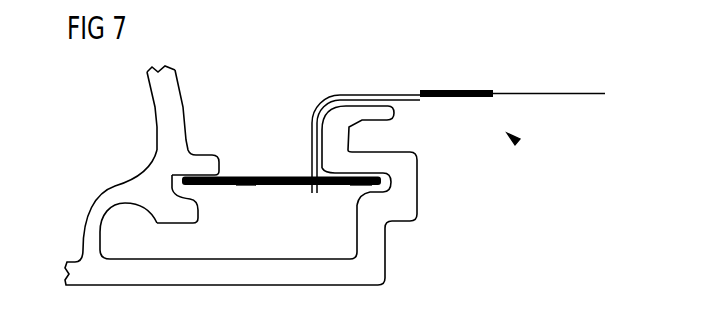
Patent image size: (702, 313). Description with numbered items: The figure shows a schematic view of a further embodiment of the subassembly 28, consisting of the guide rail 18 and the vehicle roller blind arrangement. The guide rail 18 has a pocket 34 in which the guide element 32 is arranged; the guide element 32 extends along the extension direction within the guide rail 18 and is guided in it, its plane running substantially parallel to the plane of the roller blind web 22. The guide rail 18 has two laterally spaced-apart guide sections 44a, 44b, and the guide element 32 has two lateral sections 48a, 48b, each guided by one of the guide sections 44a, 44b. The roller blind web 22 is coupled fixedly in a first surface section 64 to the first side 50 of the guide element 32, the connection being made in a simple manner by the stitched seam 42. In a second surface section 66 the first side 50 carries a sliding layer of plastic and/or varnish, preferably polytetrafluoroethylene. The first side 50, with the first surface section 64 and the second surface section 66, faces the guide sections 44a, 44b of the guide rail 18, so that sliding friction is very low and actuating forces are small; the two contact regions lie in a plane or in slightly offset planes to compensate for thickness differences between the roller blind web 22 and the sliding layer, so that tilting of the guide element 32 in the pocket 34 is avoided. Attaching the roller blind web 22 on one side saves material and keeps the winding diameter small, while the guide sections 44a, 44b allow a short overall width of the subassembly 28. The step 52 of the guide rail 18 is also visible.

The guide rail 18 is at (378, 264).
The roller blind web 22 is at (446, 89).
The subassembly 28 is at (517, 142).
The guide element 32 is at (227, 188).
The pocket 34 is at (378, 190).
The stitched seam 42 is at (309, 194).
The first guide section 44a is at (203, 157).
The second guide section 44b is at (372, 160).
The first lateral section 48a is at (246, 188).
The second lateral section 48b is at (365, 187).
The first side 50 is at (390, 172).
The step 52 is at (393, 224).
The first surface section 64 is at (262, 176).
The second surface section 66 is at (312, 173).